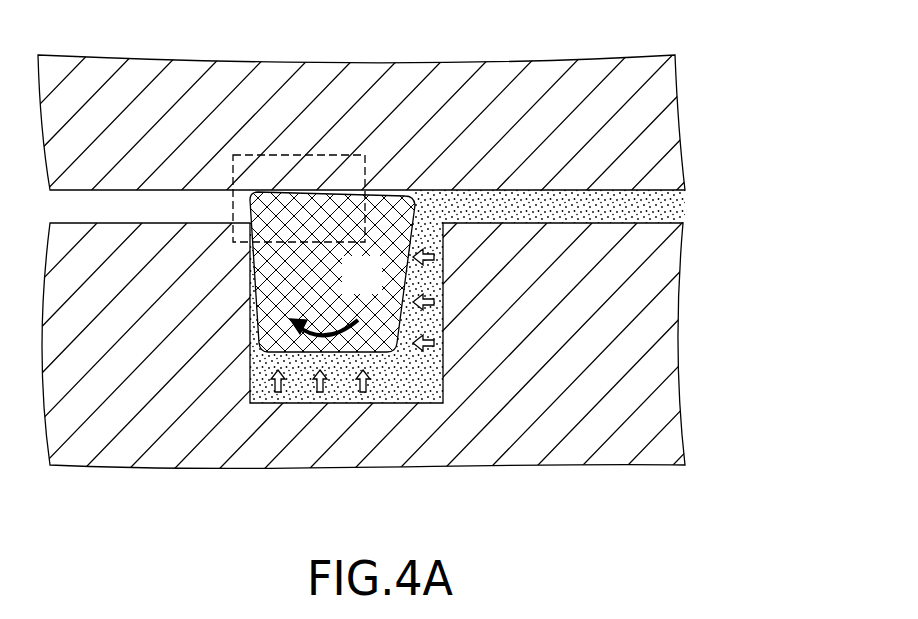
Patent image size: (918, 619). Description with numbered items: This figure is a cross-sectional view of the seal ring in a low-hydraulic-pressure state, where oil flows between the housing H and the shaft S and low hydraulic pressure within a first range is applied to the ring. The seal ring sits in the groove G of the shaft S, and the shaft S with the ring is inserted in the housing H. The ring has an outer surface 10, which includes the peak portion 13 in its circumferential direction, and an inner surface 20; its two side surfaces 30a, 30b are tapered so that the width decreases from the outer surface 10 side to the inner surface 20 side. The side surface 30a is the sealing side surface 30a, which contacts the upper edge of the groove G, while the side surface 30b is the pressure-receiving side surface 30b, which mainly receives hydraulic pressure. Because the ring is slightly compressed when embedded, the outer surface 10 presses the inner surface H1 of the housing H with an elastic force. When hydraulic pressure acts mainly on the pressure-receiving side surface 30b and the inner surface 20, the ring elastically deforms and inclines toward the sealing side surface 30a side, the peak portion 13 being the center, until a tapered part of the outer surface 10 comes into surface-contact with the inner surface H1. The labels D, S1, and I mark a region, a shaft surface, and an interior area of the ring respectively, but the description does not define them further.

The peak portion 13 is at (333, 190).
The outer surface 10 is at (373, 166).
The groove G is at (431, 218).
The region D is at (330, 340).
The housing H is at (573, 137).
The inner surface of the housing H1 is at (657, 191).
The substrate surface S1 is at (627, 223).
The shaft S is at (572, 363).
The interior I is at (377, 290).
The sealing side surface 30a is at (257, 317).
The inner surface 20 is at (348, 358).
The pressure-receiving side surface 30b is at (412, 318).